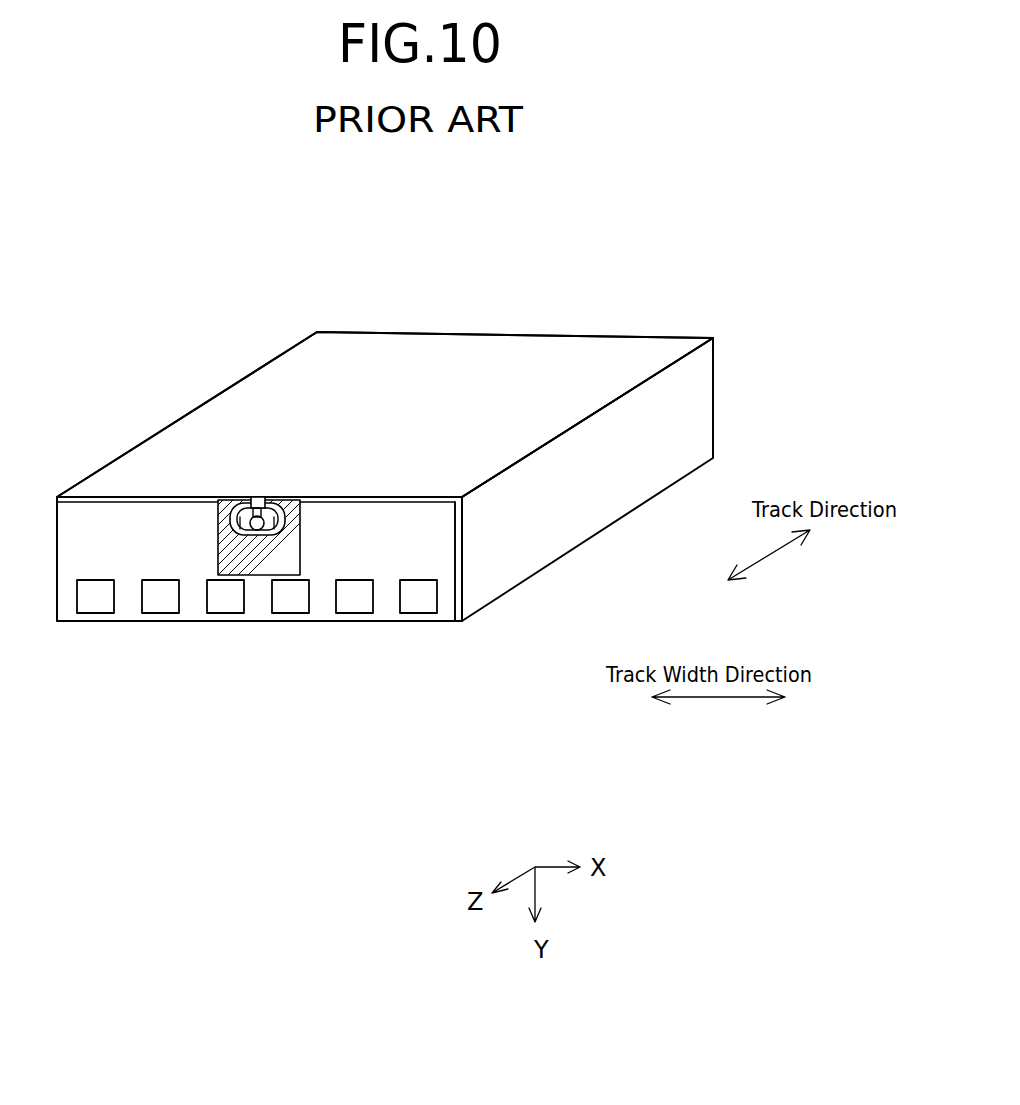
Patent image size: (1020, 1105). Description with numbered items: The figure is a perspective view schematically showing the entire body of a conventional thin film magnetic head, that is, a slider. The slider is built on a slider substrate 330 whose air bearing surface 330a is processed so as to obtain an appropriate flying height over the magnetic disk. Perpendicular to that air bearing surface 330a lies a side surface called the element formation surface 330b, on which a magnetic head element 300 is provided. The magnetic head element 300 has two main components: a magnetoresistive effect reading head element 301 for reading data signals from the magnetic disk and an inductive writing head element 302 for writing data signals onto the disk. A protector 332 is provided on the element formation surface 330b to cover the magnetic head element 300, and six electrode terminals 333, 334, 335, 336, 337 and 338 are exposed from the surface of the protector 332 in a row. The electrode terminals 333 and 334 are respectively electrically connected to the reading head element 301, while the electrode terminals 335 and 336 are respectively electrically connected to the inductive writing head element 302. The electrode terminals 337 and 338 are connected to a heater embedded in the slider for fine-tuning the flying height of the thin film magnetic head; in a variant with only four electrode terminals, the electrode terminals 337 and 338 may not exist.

The magnetic head element 300 is at (312, 499).
The magnetoresistive effect (MR) reading head element 301 is at (265, 496).
The inductive writing head element 302 is at (283, 498).
The slider substrate 330 is at (707, 405).
The air bearing surface (ABS) 330a is at (282, 380).
The element formation surface 330b is at (92, 497).
The protector 332 is at (460, 577).
The electrode terminal 333 is at (96, 603).
The electrode terminal 334 is at (160, 603).
The electrode terminal 335 is at (224, 603).
The electrode terminal 336 is at (289, 603).
The electrode terminal 337 is at (353, 603).
The electrode terminal 338 is at (417, 603).